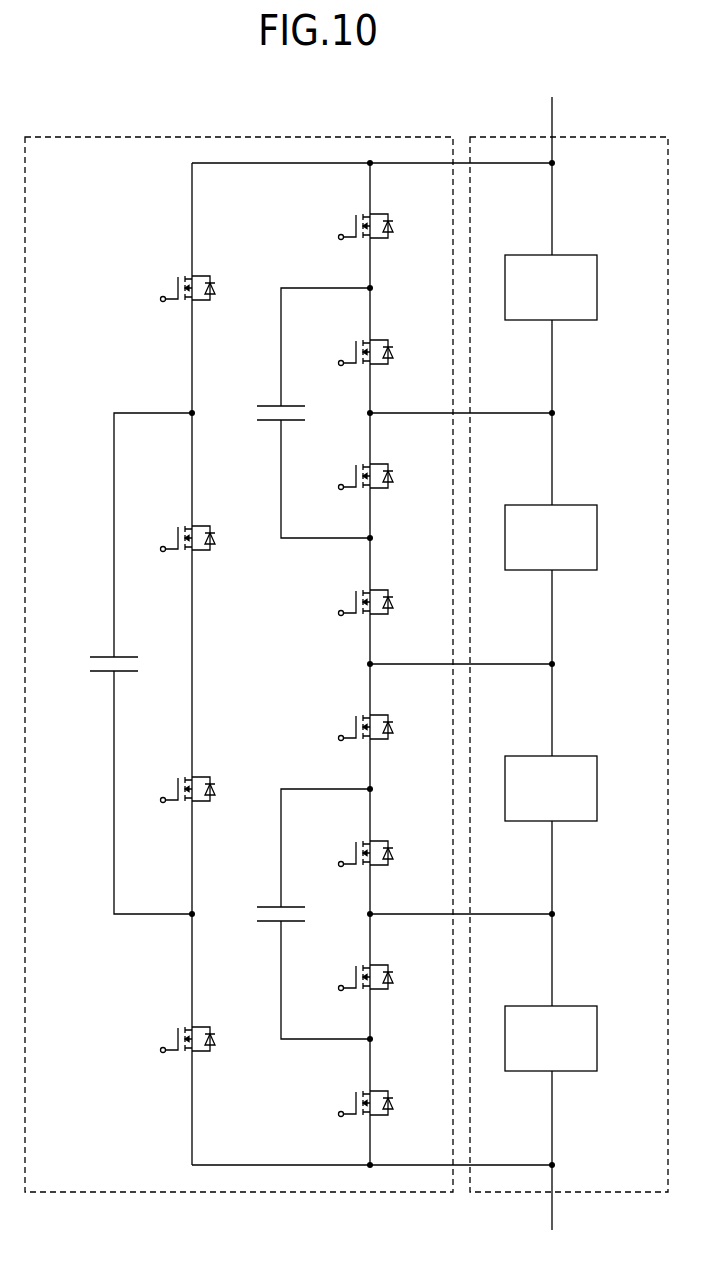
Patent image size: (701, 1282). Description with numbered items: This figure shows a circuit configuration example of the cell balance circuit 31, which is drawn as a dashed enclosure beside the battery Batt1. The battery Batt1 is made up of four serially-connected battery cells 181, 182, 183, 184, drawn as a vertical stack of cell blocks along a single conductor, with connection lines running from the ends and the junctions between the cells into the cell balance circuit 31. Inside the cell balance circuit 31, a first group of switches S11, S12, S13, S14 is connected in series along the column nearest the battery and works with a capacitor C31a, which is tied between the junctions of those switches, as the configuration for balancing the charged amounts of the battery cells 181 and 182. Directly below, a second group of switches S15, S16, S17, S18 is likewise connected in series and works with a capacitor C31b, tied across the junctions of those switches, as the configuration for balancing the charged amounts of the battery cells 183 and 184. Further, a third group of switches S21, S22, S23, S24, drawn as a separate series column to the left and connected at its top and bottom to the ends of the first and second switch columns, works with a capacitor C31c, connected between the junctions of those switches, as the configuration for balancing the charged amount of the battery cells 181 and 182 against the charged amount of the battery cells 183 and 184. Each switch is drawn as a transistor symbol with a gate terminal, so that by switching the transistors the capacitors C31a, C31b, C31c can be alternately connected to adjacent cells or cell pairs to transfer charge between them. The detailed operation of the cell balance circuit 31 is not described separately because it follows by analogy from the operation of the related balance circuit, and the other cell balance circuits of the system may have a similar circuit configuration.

The cell balance circuit 31 is at (60, 136).
The battery Batt1 is at (613, 136).
The battery cell 181 is at (577, 254).
The battery cell 182 is at (577, 504).
The battery cell 183 is at (577, 755).
The battery cell 184 is at (577, 1005).
The switch S11 is at (389, 226).
The switch S12 is at (389, 352).
The switch S13 is at (389, 476).
The switch S14 is at (389, 602).
The switch S15 is at (389, 727).
The switch S16 is at (389, 853).
The switch S17 is at (389, 977).
The switch S18 is at (389, 1103).
The switch S21 is at (211, 288).
The switch S22 is at (211, 538).
The switch S23 is at (211, 789).
The switch S24 is at (211, 1039).
The capacitor C31a is at (295, 413).
The capacitor C31b is at (294, 914).
The capacitor C31c is at (122, 663).